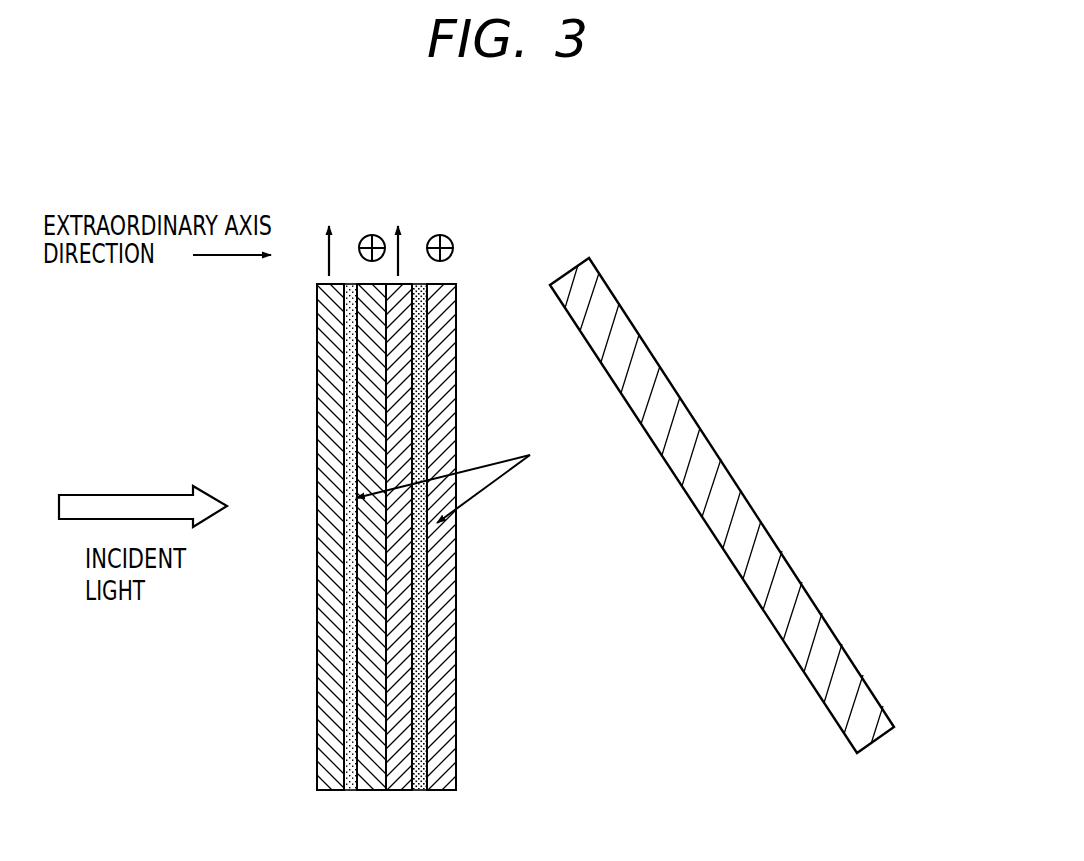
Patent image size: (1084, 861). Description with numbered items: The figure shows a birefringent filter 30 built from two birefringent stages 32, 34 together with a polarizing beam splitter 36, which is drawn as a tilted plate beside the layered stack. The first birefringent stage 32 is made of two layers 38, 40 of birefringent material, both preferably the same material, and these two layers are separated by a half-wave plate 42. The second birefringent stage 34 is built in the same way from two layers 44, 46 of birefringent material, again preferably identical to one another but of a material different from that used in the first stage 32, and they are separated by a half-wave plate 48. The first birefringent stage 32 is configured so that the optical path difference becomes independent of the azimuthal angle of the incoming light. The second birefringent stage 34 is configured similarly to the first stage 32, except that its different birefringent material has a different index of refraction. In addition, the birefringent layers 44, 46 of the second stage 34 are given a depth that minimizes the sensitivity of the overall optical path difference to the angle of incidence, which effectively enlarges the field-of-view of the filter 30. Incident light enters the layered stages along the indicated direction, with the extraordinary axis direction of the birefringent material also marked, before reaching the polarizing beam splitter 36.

The birefringent filter 30 is at (698, 236).
The first birefringent stage 32 is at (385, 793).
The second birefringent stage 34 is at (454, 793).
The polarizing beam splitter 36 is at (822, 638).
The layer of birefringent material 38 is at (330, 344).
The layer of birefringent material 40 is at (368, 475).
The half-wave plate 42 is at (352, 425).
The layer of birefringent material 44 is at (400, 745).
The layer of birefringent material 46 is at (447, 628).
The half-wave plate 48 is at (422, 686).